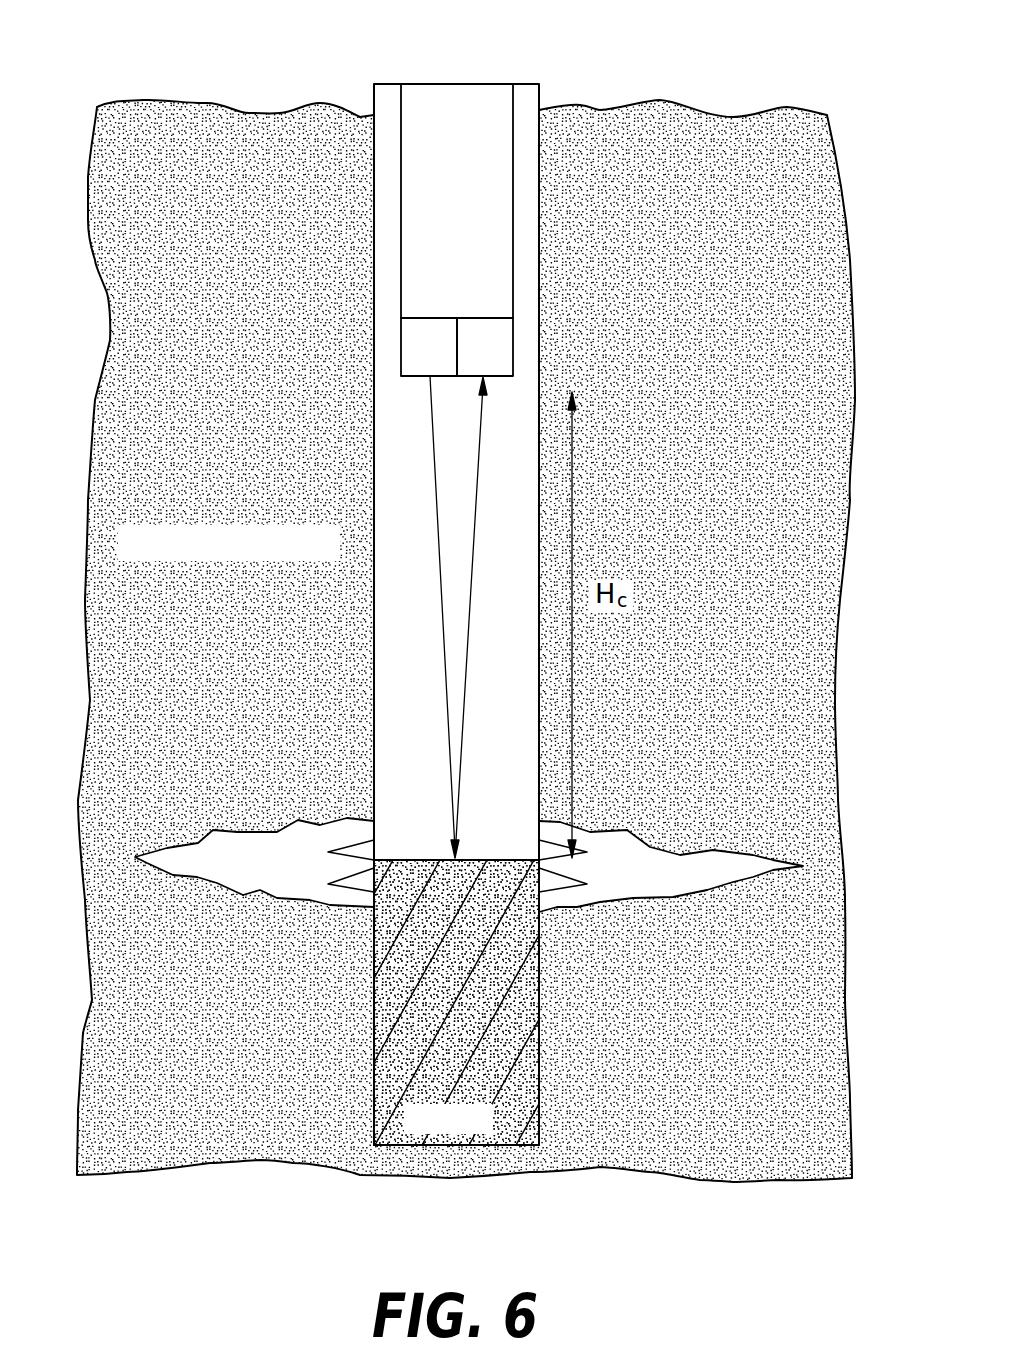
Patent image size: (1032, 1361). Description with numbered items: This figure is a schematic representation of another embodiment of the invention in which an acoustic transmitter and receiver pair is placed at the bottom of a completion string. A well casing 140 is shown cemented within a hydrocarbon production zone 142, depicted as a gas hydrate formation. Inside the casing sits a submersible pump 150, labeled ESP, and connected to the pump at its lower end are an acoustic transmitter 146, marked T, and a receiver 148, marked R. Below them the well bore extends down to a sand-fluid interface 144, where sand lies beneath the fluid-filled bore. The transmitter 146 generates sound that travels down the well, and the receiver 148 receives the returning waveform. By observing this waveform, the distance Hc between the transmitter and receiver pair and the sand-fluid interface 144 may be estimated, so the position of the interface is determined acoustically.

The well casing 140 is at (521, 84).
The hydrocarbon production zone 142 is at (737, 486).
The sand-fluid interface 144 is at (502, 860).
The acoustic transmitter 146 is at (401, 356).
The receiver 148 is at (514, 356).
The submersible pump 150 is at (407, 84).